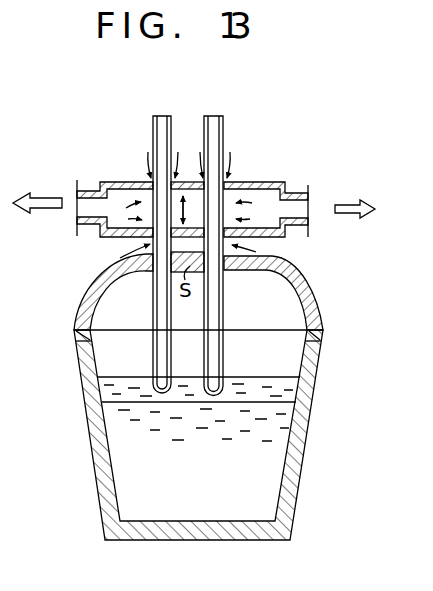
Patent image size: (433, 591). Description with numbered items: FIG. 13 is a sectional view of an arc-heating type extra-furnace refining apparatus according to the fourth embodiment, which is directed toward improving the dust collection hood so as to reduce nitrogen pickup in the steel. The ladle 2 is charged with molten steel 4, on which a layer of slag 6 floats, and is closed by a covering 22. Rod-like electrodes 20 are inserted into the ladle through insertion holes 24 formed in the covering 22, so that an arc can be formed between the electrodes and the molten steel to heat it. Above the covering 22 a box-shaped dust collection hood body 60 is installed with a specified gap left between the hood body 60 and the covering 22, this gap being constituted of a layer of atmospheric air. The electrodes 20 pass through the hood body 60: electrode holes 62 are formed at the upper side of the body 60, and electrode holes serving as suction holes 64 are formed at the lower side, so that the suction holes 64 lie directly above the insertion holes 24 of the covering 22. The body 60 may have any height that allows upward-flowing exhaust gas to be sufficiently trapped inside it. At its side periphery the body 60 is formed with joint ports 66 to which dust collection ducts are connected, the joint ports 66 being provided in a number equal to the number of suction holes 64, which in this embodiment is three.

The ladle 2 is at (310, 434).
The molten steel 4 is at (275, 484).
The slag 6 is at (259, 393).
The electrode 20 is at (159, 128).
The covering 22 is at (320, 312).
The insertion hole 24 is at (288, 270).
The dust collection hood body 60 is at (206, 204).
The electrode hole 62 is at (226, 182).
The suction hole 64 is at (128, 239).
The joint port 66 is at (93, 190).